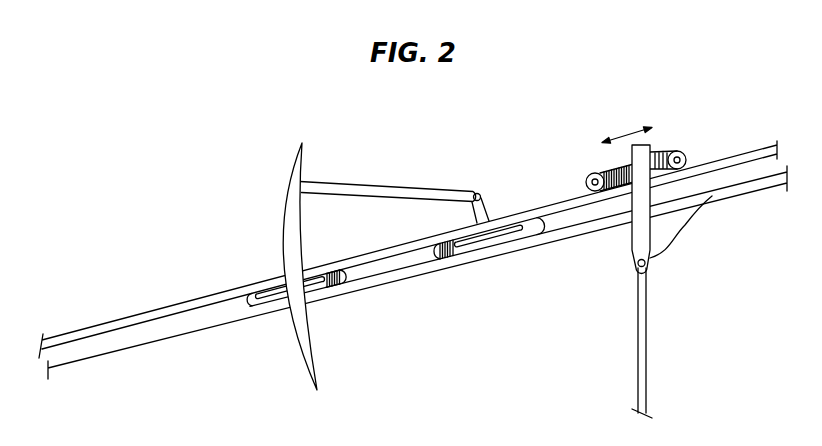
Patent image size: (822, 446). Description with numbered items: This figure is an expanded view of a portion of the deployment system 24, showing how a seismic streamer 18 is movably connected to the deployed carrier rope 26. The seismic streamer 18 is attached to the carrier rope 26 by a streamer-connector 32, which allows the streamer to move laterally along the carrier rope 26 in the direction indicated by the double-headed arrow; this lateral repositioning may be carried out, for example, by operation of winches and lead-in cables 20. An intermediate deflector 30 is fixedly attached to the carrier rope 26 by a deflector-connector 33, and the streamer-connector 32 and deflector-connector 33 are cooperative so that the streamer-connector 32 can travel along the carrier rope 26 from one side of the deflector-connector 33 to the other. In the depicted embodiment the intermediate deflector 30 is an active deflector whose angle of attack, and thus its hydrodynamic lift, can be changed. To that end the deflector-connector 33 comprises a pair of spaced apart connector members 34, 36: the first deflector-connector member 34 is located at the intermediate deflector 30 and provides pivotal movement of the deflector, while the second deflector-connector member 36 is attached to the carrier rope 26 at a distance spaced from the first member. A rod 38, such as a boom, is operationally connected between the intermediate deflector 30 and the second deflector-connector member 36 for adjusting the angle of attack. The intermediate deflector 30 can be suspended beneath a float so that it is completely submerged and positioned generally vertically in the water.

The seismic streamer 18 is at (647, 330).
The lead-in cable 20 is at (148, 345).
The deployment system 24 is at (195, 122).
The carrier rope 26 is at (112, 322).
The intermediate deflector 30 is at (292, 178).
The streamer-connector 32 is at (607, 170).
The deflector-connector 33 is at (392, 163).
The first deflector-connector member 34 is at (252, 292).
The second deflector-connector member 36 is at (505, 240).
The rod 38 is at (375, 198).